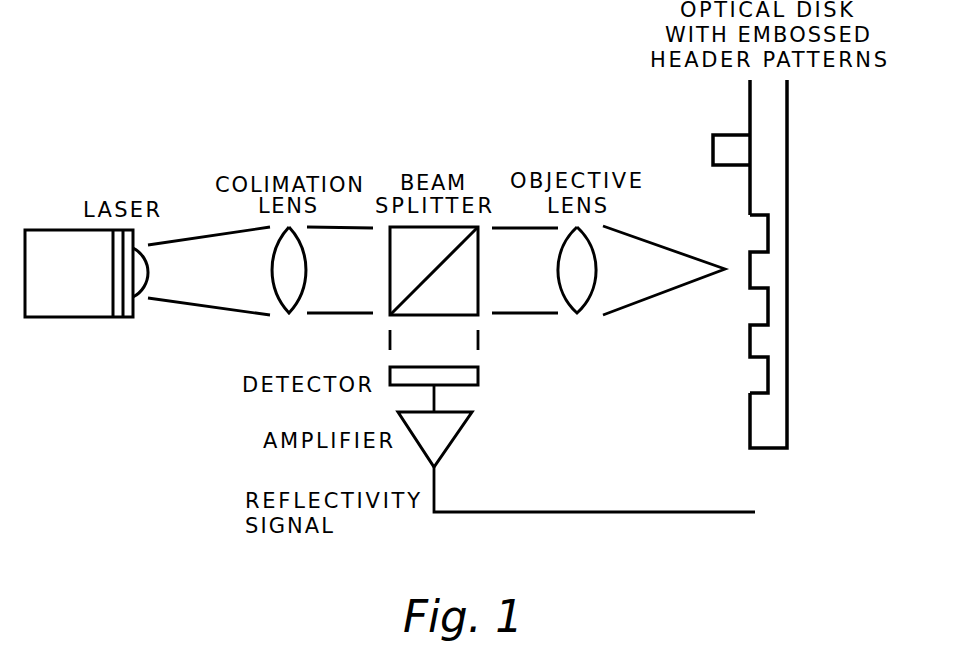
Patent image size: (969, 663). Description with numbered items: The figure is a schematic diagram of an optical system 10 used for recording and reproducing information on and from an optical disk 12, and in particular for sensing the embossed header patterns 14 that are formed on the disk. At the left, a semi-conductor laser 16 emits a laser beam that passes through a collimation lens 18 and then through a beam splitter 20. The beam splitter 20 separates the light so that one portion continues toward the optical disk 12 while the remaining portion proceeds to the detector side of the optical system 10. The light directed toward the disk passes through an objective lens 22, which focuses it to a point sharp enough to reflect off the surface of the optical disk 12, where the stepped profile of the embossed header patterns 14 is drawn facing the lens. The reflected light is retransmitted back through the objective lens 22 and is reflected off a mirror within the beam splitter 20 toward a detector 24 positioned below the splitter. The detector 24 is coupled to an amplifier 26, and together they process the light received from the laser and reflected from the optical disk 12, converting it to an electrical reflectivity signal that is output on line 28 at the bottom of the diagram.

The optical system 10 is at (110, 148).
The optical disk 12 is at (750, 115).
The embossed header patterns 14 is at (767, 380).
The semi-conductor laser 16 is at (85, 318).
The collimation lens 18 is at (290, 306).
The beam splitter 20 is at (390, 283).
The objective lens 22 is at (578, 305).
The detector 24 is at (478, 377).
The amplifier 26 is at (444, 455).
The line 28 is at (602, 512).